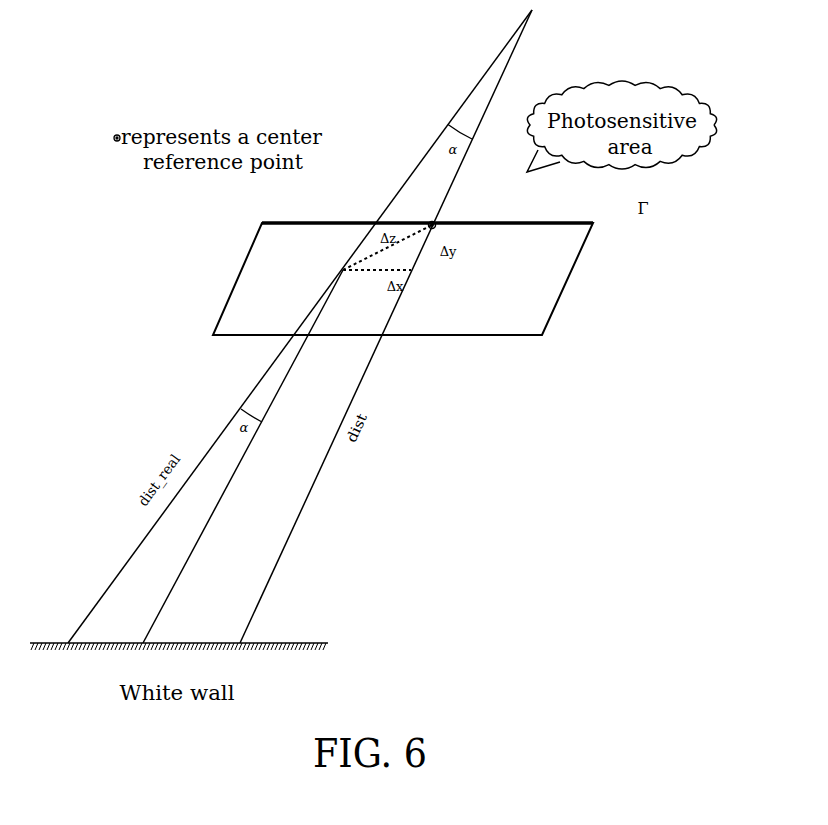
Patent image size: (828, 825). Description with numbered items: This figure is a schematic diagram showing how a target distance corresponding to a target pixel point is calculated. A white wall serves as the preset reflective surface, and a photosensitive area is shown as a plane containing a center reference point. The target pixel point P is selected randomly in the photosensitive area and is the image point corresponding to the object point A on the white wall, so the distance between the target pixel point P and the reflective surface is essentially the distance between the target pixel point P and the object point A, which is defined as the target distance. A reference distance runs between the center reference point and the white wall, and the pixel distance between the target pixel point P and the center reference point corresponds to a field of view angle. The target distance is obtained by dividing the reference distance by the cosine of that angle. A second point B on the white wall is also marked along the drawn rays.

The object point A is at (297, 345).
The point B on white wall B is at (239, 475).
The target pixel point P is at (375, 248).